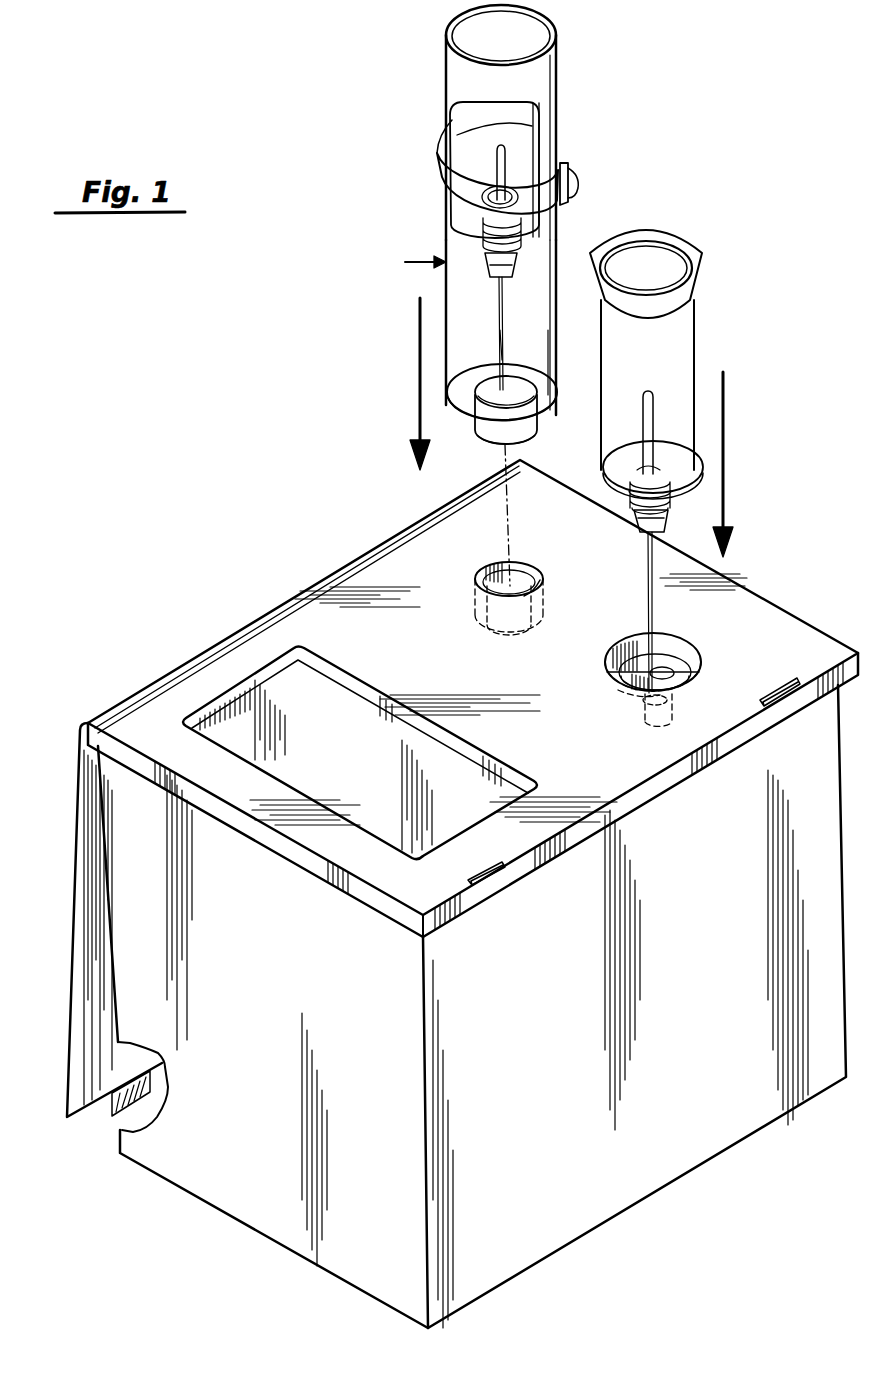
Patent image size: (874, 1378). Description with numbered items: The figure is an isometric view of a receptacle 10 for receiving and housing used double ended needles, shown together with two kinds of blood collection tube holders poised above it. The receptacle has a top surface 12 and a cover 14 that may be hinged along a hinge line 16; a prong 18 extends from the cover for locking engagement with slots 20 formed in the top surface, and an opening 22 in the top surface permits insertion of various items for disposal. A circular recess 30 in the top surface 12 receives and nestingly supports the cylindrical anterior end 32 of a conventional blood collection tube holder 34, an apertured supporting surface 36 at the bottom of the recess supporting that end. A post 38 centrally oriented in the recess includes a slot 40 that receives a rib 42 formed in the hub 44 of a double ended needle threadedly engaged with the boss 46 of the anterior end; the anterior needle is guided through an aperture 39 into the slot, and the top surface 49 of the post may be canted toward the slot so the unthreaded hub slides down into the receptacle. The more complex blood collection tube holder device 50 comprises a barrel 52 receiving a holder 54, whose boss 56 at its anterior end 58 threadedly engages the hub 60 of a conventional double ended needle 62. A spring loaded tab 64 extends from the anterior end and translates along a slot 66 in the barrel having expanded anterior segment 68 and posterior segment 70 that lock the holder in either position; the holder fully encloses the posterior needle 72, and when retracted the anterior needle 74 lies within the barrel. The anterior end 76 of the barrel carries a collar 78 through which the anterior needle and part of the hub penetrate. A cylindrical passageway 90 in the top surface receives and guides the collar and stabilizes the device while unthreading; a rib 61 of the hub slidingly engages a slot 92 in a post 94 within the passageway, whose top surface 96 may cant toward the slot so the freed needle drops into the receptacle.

The receptacle 10 is at (660, 1131).
The top surface 12 is at (408, 586).
The cover 14 is at (78, 822).
The hinge line 16 is at (222, 641).
The prong 18 is at (112, 1118).
The slots 20 is at (777, 700).
The opening 22 is at (361, 773).
The circular recess 30 is at (634, 651).
The cylindrical anterior end 32 is at (696, 478).
The blood collection tube holder 34 is at (699, 347).
The apertured supporting surface 36 is at (690, 672).
The post 38 is at (640, 705).
The aperture 39 is at (663, 670).
The slot 40 is at (672, 697).
The rib 42 is at (664, 516).
The hub 44 is at (648, 533).
The boss 46 is at (632, 500).
The top surface of the post 49 is at (644, 708).
The blood collection tube holder device 50 is at (495, 237).
The barrel 52 is at (446, 300).
The holder 54 is at (446, 83).
The boss 56 is at (466, 197).
The anterior end 58 is at (448, 228).
The hub 60 is at (514, 272).
The rib 61 is at (492, 276).
The double ended needle 62 is at (499, 349).
The spring loaded tab 64 is at (580, 180).
The slot 66 is at (558, 241).
The anterior segment 68 is at (556, 366).
The posterior segment 70 is at (566, 166).
The posterior needle 72 is at (495, 170).
The anterior needle 74 is at (505, 341).
The anterior end 76 is at (466, 409).
The collar 78 is at (530, 432).
The cylindrical passageway 90 is at (494, 567).
The slot 92 is at (513, 585).
The post 94 is at (480, 612).
The top surface of the post 96 is at (532, 583).